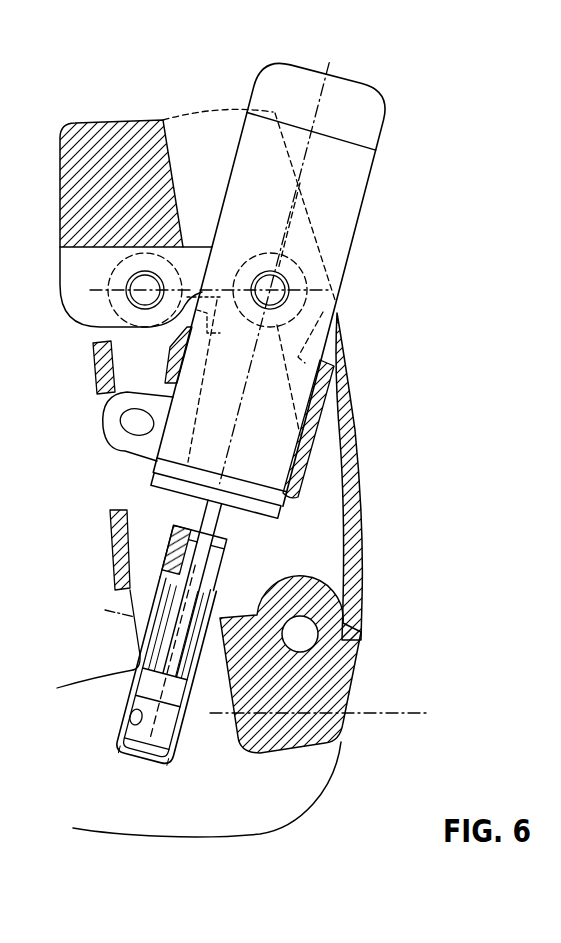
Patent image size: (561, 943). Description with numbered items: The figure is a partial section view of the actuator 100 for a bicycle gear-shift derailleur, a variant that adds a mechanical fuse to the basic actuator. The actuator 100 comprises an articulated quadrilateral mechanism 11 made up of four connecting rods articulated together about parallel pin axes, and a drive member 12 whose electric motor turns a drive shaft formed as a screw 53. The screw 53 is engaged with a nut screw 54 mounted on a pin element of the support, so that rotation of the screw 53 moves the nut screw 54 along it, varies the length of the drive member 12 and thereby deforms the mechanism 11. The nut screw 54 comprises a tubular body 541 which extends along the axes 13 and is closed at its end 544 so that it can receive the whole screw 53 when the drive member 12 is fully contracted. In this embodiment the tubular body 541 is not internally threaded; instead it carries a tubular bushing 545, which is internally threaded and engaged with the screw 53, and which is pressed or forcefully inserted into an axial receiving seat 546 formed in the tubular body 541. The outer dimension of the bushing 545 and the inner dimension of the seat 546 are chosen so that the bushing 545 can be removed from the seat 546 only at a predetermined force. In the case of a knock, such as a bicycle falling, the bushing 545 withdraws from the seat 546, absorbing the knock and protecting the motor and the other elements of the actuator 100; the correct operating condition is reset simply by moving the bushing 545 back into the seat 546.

The actuator 100 is at (413, 93).
The articulated quadrilateral mechanism 11 is at (357, 326).
The drive member 12 is at (376, 192).
The axes 13 is at (323, 88).
The screw 53 is at (197, 516).
The nut screw 54 is at (256, 533).
The tubular bushing 545 is at (224, 551).
The tubular body 541 is at (180, 737).
The end 544 is at (140, 757).
The axial receiving seat 546 is at (140, 729).